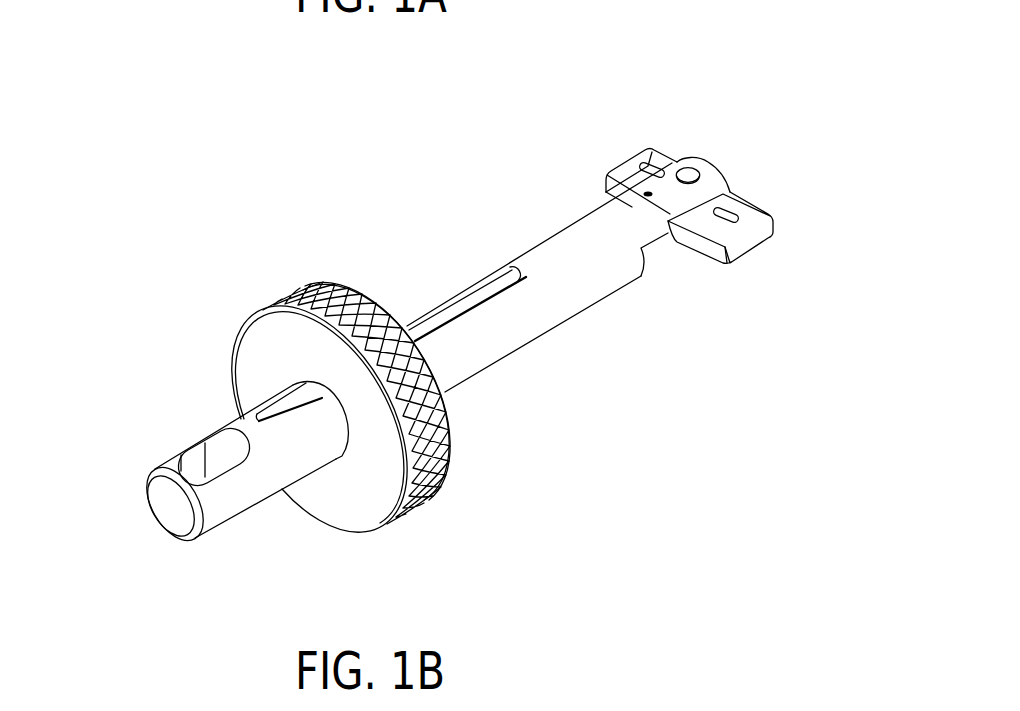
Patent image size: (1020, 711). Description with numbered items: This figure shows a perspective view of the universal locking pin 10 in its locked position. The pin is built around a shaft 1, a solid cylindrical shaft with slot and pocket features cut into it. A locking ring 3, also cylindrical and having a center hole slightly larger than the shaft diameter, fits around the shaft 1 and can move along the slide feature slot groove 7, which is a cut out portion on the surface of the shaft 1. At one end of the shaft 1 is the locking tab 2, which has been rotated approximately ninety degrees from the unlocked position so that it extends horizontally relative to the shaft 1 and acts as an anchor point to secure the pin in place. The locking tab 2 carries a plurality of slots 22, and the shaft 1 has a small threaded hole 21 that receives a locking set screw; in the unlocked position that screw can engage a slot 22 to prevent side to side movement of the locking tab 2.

The universal locking pin 10 is at (140, 296).
The shaft 1 is at (140, 469).
The locking ring 3 is at (434, 505).
The slide feature slot groove 7 is at (436, 308).
The locking tab 2 is at (654, 134).
The small threaded hole 21 is at (648, 193).
The slots 22 is at (660, 166).